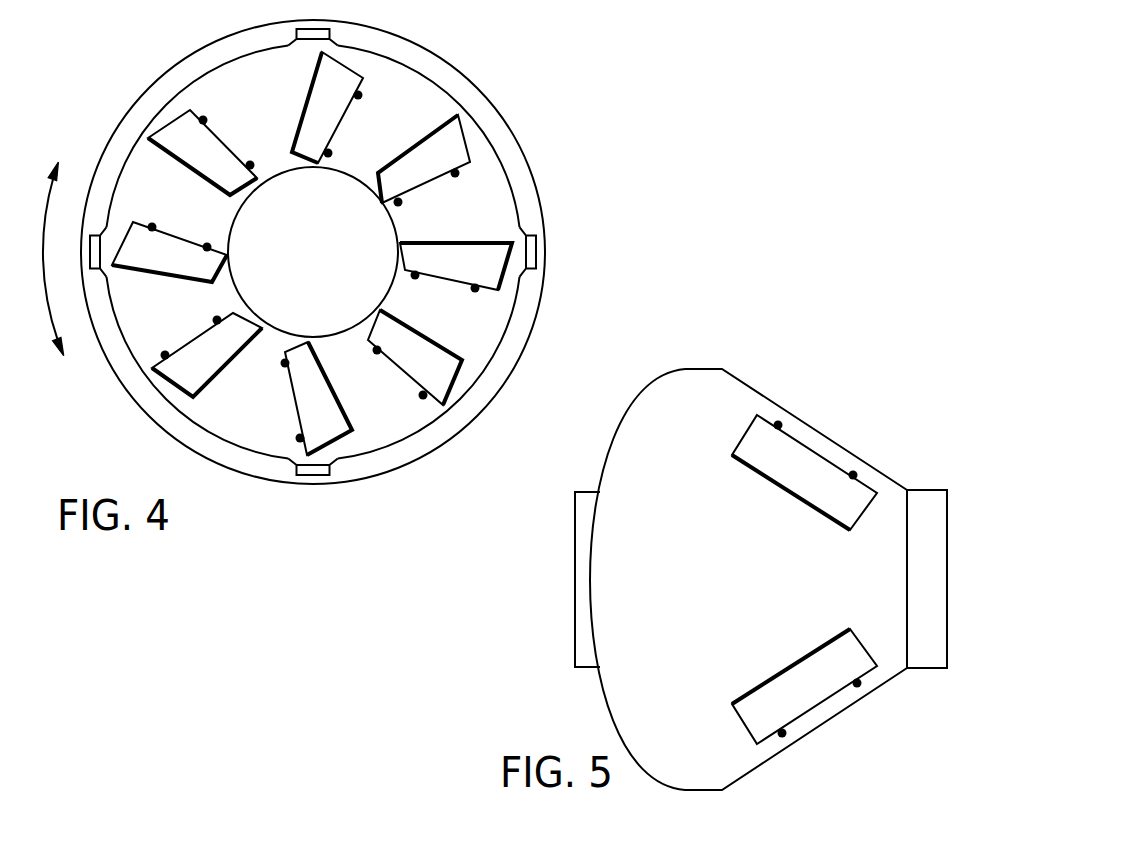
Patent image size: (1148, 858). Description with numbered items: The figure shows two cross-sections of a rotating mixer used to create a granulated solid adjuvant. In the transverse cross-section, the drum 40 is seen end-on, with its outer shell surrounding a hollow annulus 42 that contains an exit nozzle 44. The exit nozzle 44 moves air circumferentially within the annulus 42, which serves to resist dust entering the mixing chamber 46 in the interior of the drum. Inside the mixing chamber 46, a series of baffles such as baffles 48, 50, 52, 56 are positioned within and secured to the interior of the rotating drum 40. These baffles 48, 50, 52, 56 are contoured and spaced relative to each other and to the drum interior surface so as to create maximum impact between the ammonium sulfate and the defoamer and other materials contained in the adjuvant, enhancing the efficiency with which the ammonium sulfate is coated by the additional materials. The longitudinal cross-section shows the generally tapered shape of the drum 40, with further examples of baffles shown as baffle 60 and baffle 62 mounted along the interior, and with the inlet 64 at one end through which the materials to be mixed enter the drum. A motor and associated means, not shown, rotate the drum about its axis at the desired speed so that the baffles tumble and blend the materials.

In FIG. 5, the drum 40 is at (740, 370).
In FIG. 4, the hollow annulus 42 is at (515, 348).
In FIG. 4, the exit nozzle 44 is at (538, 253).
In FIG. 4, the mixing chamber 46 is at (482, 203).
In FIG. 4, the baffle 48 is at (333, 422).
In FIG. 4, the baffle 50 is at (183, 372).
In FIG. 4, the baffle 52 is at (453, 137).
In FIG. 4, the baffle 56 is at (475, 256).
In FIG. 5, the baffle 60 is at (817, 487).
In FIG. 5, the baffle 62 is at (798, 690).
In FIG. 5, the inlet 64 is at (932, 505).